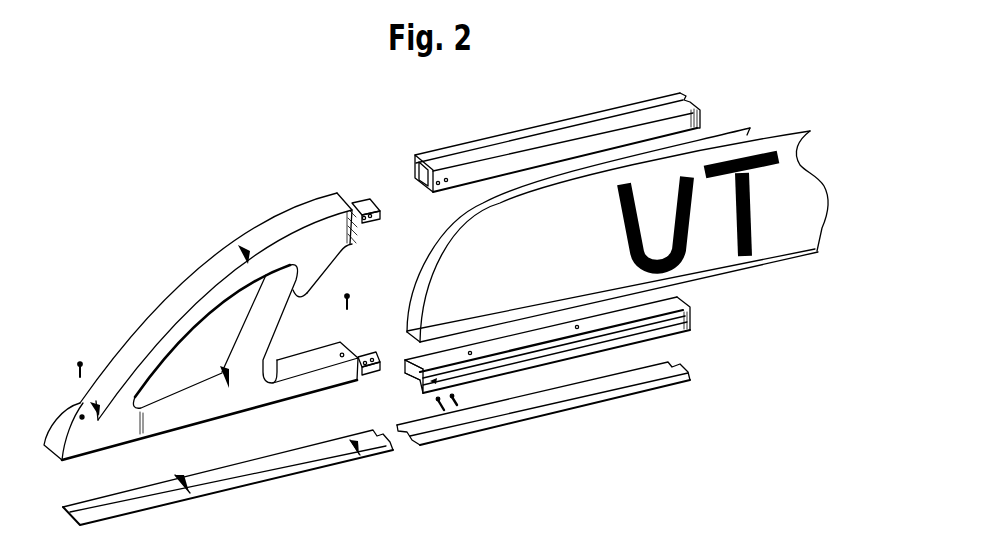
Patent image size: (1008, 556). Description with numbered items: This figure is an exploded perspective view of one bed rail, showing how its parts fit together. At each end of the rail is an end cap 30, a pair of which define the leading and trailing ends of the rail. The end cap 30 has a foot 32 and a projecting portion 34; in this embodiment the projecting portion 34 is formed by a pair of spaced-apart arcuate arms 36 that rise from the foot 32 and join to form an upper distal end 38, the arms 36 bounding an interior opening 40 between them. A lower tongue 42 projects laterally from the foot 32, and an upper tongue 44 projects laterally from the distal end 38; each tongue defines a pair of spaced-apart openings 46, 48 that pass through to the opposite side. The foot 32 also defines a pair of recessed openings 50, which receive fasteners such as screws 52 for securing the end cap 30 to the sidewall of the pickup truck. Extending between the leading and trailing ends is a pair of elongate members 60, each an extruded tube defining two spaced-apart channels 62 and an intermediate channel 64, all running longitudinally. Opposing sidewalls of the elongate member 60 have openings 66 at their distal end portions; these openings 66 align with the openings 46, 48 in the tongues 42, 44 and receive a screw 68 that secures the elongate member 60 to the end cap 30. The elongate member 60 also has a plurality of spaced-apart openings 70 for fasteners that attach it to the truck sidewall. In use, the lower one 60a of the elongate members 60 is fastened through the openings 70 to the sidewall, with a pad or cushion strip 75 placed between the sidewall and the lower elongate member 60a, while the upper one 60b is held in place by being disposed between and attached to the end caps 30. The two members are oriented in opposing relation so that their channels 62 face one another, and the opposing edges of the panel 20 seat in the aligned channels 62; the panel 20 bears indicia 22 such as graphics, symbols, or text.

The panel 20 is at (740, 130).
The indicia 22 is at (695, 252).
The end cap 30 is at (168, 195).
The foot 32 is at (124, 438).
The projecting portion 34 is at (180, 287).
The arcuate arms 36 is at (160, 318).
The upper distal end 38 is at (333, 204).
The interior opening 40 is at (177, 366).
The lower tongue 42 is at (356, 347).
The upper tongue 44 is at (358, 203).
The openings 46 is at (364, 370).
The openings 48 is at (383, 215).
The recessed openings 50 is at (82, 415).
The screws 52 is at (77, 365).
The elongate members 60 is at (641, 102).
The lower elongate member 60a is at (608, 338).
The upper elongate member 60b is at (566, 130).
The channels 62 is at (405, 369).
The intermediate channel 64 is at (413, 379).
The openings 66 is at (437, 381).
The screw 68 is at (455, 405).
The spaced-apart openings 70 is at (471, 354).
The pad or cushion strip 75 is at (588, 392).